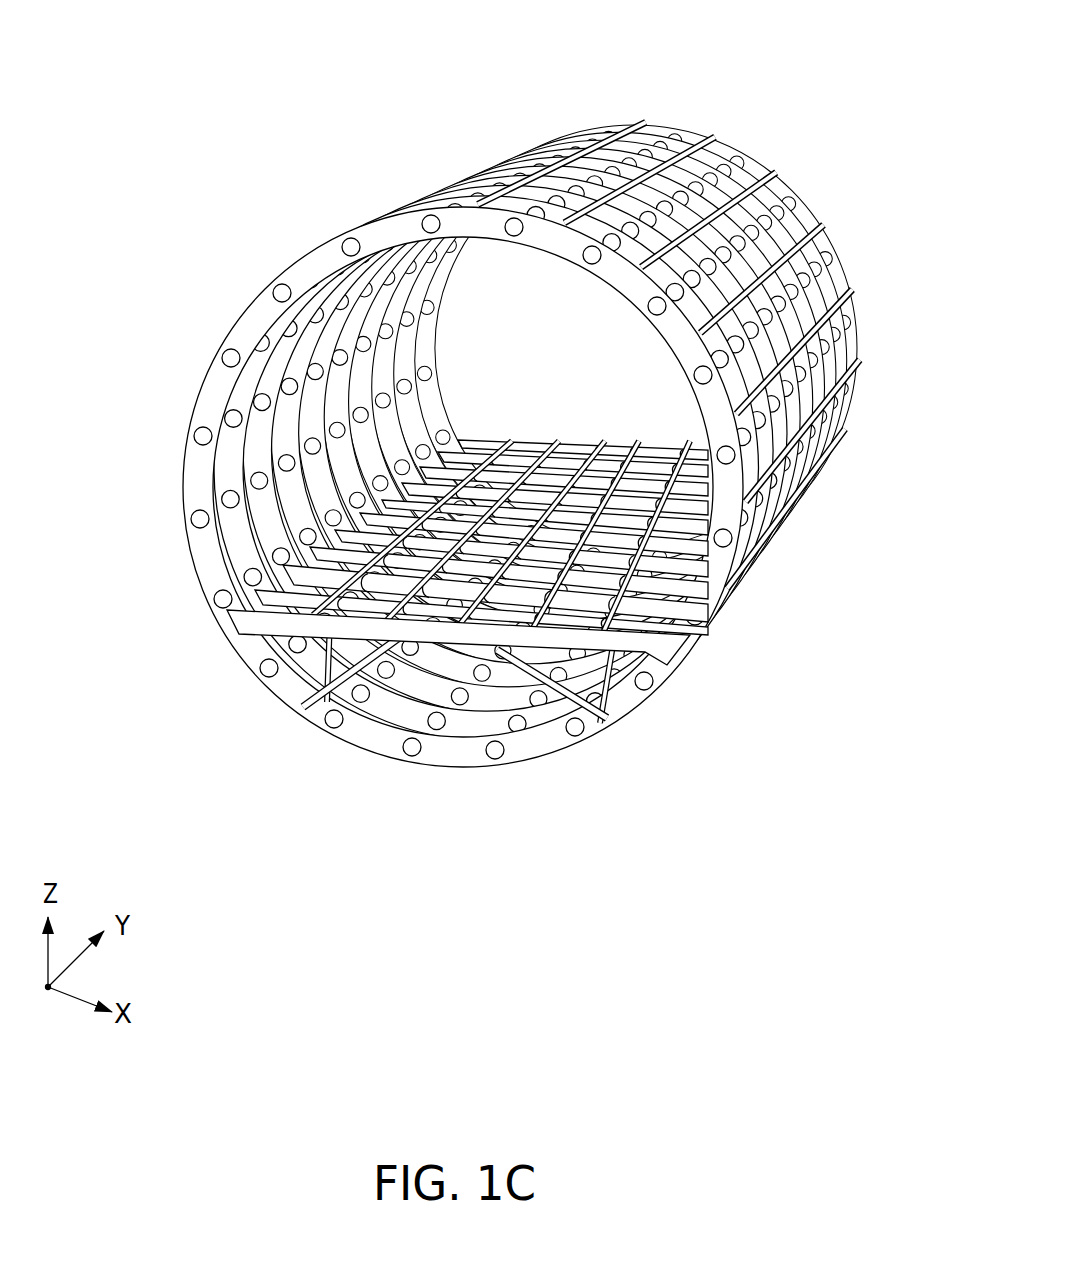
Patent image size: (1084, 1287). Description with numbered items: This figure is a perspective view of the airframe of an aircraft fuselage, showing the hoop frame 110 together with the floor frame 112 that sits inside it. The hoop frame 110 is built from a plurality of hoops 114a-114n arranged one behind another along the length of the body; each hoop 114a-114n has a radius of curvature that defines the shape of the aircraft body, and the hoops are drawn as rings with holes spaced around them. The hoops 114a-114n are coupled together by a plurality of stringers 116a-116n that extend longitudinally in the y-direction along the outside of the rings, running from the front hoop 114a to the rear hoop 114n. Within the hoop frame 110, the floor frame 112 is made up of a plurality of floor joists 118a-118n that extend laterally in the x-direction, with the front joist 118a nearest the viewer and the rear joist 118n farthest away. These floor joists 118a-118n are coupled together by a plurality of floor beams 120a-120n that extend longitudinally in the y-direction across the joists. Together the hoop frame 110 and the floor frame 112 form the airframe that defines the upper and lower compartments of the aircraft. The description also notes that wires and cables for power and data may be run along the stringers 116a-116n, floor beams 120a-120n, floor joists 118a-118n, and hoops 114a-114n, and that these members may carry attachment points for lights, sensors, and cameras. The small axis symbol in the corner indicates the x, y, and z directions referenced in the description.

The hoop frame 110 is at (573, 427).
The floor frame 112 is at (488, 575).
The hoop 114a is at (623, 698).
The hoop 114n is at (758, 167).
The stringer 116a is at (648, 130).
The stringer 116n is at (838, 444).
The floor joist 118a is at (678, 645).
The floor joist 118n is at (663, 450).
The floor beam 120a is at (327, 701).
The floor beam 120n is at (604, 712).